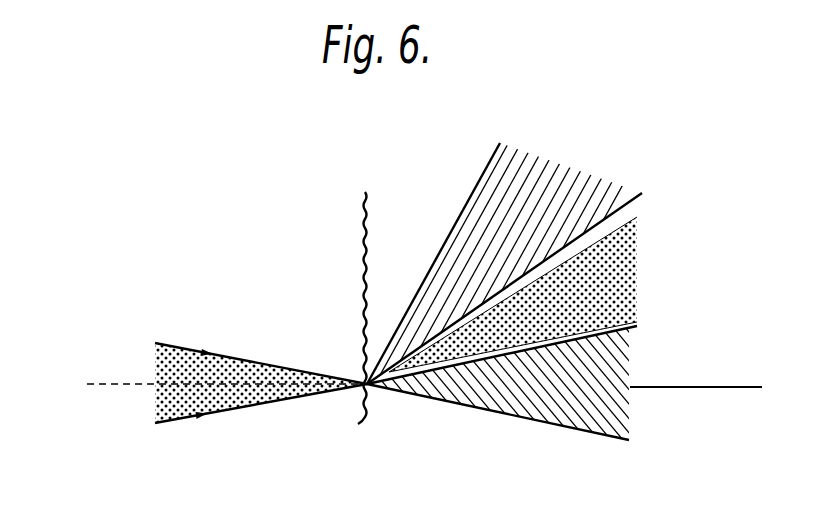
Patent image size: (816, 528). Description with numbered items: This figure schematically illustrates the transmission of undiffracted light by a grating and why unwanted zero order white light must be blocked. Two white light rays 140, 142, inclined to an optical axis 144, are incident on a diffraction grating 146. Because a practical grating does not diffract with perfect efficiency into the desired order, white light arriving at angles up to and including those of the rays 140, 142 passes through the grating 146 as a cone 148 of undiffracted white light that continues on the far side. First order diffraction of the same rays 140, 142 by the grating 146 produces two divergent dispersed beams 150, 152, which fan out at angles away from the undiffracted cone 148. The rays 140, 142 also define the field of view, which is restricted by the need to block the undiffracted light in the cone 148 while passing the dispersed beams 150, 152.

The white light ray 140 is at (180, 348).
The white light ray 142 is at (192, 417).
The optical axis 144 is at (101, 386).
The diffraction grating 146 is at (367, 420).
The cone of undiffracted white light 148 is at (629, 414).
The divergent dispersed beam 150 is at (600, 283).
The divergent dispersed beam 152 is at (553, 183).